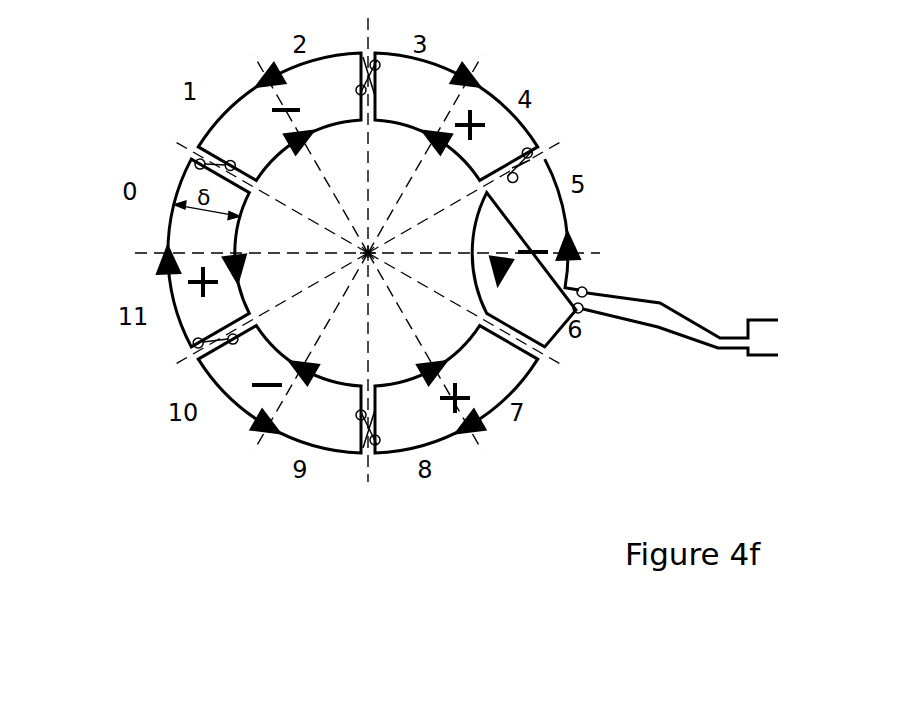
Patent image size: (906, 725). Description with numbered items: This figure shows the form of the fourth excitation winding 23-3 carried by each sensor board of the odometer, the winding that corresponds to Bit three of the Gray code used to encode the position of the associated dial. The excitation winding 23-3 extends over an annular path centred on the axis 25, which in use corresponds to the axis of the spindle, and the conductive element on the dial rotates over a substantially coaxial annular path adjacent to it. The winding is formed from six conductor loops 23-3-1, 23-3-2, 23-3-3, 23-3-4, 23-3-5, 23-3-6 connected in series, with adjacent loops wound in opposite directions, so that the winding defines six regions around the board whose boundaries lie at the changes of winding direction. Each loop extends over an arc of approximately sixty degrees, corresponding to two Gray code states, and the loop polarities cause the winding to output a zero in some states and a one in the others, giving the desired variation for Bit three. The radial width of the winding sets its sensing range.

The excitation winding 23-3 is at (650, 303).
The conductor loop 23-3-1 is at (182, 270).
The conductor loop 23-3-2 is at (294, 92).
The conductor loop 23-3-3 is at (440, 84).
The conductor loop 23-3-4 is at (560, 224).
The conductor loop 23-3-5 is at (495, 385).
The conductor loop 23-3-6 is at (275, 404).
The axis 25 is at (373, 252).